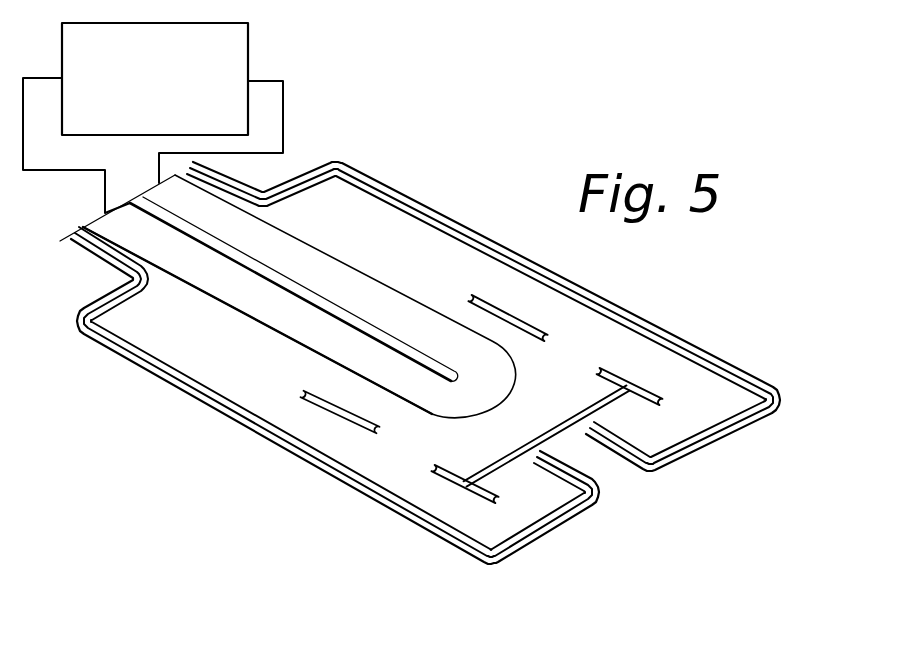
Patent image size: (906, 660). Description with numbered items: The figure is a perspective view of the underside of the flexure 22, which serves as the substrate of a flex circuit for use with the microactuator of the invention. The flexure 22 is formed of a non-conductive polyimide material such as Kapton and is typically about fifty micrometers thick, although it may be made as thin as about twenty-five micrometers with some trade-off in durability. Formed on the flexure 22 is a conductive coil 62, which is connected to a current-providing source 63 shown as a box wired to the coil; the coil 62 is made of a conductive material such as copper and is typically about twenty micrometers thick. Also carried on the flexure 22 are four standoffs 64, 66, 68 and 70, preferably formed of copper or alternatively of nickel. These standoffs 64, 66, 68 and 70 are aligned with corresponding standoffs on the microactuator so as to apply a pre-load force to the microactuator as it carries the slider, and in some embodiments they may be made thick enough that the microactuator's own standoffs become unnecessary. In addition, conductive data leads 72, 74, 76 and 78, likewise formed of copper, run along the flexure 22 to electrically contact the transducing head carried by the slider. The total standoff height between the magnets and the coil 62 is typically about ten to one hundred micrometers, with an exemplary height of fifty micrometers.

The flexure 22 is at (758, 375).
The conductive coil 62 is at (325, 277).
The current-providing source 63 is at (250, 37).
The standoff 64 is at (342, 423).
The standoff 66 is at (462, 478).
The standoff 68 is at (512, 313).
The standoff 70 is at (657, 392).
The conductive lead 72 is at (154, 382).
The conductive lead 74 is at (237, 394).
The conductive lead 76 is at (424, 195).
The conductive lead 78 is at (460, 243).